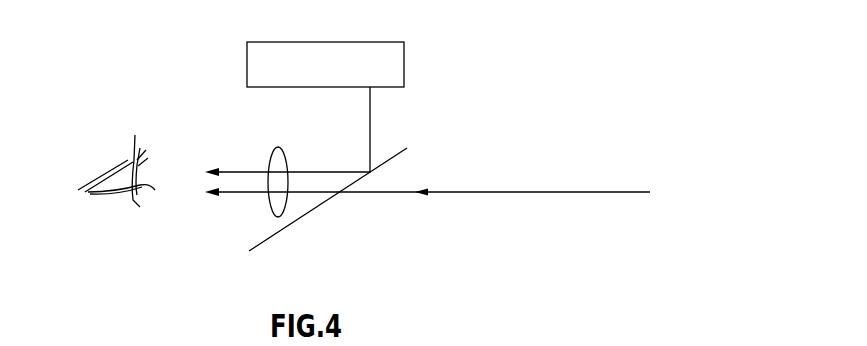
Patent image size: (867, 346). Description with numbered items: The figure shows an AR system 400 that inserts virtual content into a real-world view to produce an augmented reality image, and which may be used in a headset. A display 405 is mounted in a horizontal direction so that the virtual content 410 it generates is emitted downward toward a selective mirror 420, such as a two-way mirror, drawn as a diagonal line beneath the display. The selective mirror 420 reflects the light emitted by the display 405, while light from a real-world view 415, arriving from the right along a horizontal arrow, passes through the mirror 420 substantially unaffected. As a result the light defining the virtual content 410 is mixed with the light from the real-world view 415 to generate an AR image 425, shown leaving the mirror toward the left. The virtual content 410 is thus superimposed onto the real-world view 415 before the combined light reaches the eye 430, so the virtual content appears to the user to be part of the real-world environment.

The AR system 400 is at (163, 35).
The display 405 is at (404, 64).
The virtual content 410 is at (370, 120).
The real-world view 415 is at (543, 192).
The selective mirror 420 is at (313, 212).
The AR image 425 is at (276, 148).
The eye 430 is at (127, 160).